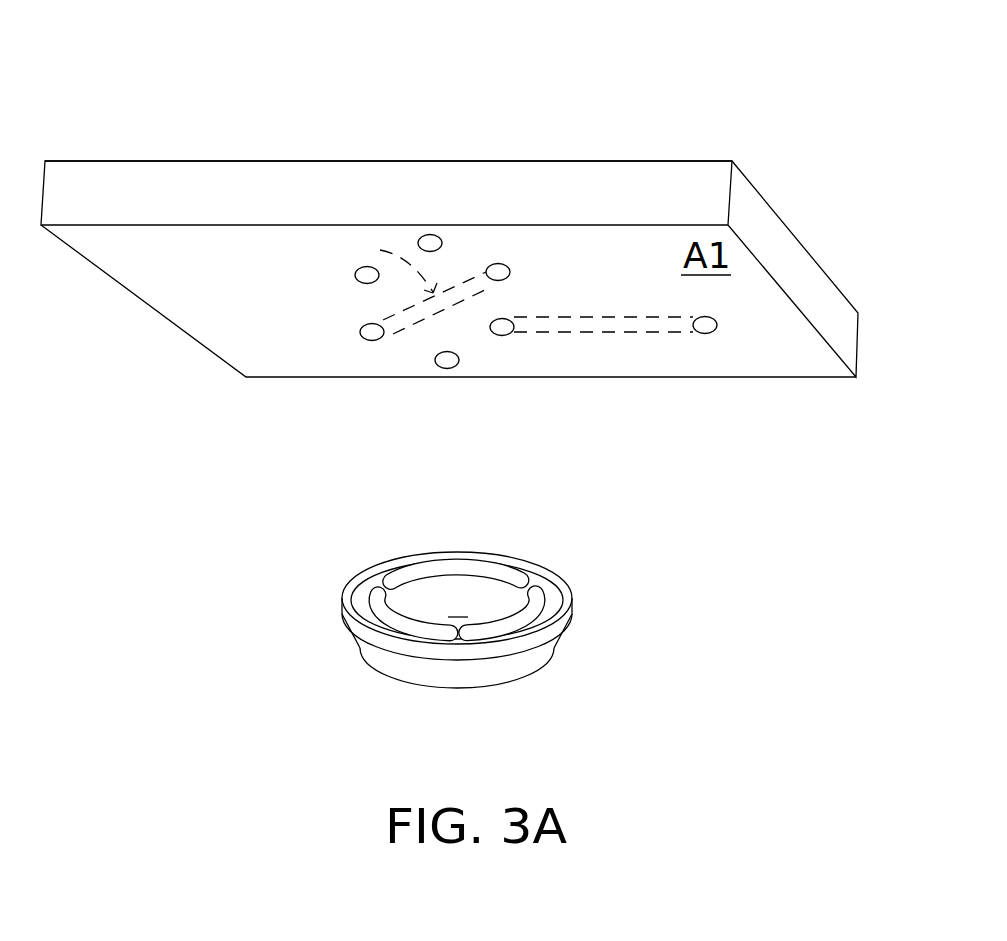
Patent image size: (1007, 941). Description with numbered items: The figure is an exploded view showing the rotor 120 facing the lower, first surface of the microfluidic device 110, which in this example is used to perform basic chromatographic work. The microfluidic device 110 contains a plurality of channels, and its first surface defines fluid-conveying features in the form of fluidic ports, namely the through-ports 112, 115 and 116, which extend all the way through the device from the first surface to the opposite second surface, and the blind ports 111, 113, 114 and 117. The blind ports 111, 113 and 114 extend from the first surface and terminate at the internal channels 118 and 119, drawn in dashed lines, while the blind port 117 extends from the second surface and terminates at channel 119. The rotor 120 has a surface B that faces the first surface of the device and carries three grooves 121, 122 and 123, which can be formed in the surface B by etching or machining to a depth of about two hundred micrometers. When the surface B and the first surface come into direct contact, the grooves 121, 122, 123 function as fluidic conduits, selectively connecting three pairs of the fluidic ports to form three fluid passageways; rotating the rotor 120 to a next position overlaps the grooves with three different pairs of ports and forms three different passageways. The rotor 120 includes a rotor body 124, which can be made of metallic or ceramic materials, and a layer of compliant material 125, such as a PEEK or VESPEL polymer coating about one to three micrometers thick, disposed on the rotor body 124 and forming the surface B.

The microfluidic device 110 is at (712, 103).
The blind port 111 is at (360, 337).
The through-port 112 is at (479, 182).
The blind port 113 is at (503, 318).
The blind port 114 is at (508, 266).
The through-port 115 is at (442, 242).
The through-port 116 is at (355, 278).
The blind port 117 is at (717, 322).
The channel 118 is at (408, 285).
The channel 119 is at (585, 317).
The rotor 120 is at (527, 605).
The groove 121 is at (500, 570).
The groove 122 is at (560, 621).
The groove 123 is at (355, 620).
The rotor body 124 is at (392, 665).
The layer of compliant material 125 is at (552, 635).